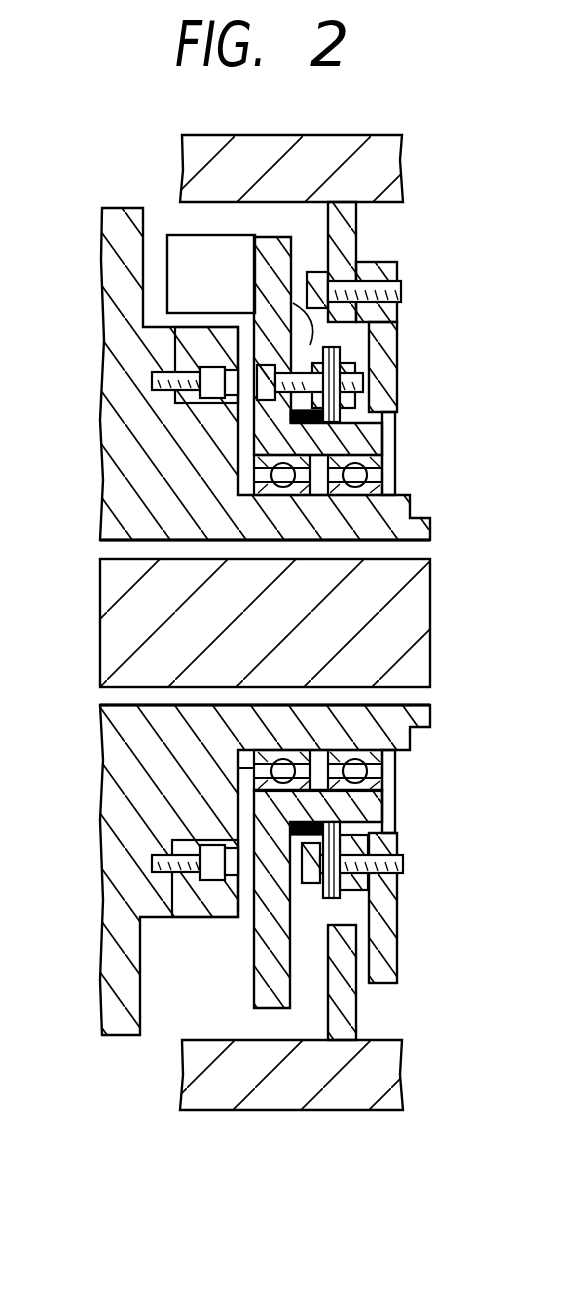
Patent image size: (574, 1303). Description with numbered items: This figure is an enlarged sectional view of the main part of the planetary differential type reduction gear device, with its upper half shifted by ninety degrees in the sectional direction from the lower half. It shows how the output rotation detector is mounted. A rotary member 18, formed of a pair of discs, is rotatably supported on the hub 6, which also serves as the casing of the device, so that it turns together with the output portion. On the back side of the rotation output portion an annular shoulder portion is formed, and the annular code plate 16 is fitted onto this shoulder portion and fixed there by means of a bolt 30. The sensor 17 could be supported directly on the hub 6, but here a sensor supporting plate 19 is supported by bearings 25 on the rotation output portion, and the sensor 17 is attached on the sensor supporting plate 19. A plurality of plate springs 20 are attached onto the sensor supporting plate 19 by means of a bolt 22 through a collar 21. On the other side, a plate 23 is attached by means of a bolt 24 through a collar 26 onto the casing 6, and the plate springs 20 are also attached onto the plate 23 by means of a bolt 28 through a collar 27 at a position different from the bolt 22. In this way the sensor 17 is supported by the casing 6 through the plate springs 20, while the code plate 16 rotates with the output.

The hub 6 is at (396, 162).
The code plate 16 is at (175, 343).
The sensor 17 is at (178, 242).
The rotary member 18 is at (118, 463).
The sensor supporting plate 19 is at (352, 228).
The plate springs 20 is at (342, 347).
The collar 21 is at (302, 318).
The bolt 22 is at (365, 383).
The plate 23 is at (399, 322).
The bolt 24 is at (404, 290).
The bearings 25 is at (381, 461).
The collar 26 is at (364, 258).
The collar 27 is at (350, 890).
The bolt 28 is at (402, 858).
The bolt 30 is at (152, 382).